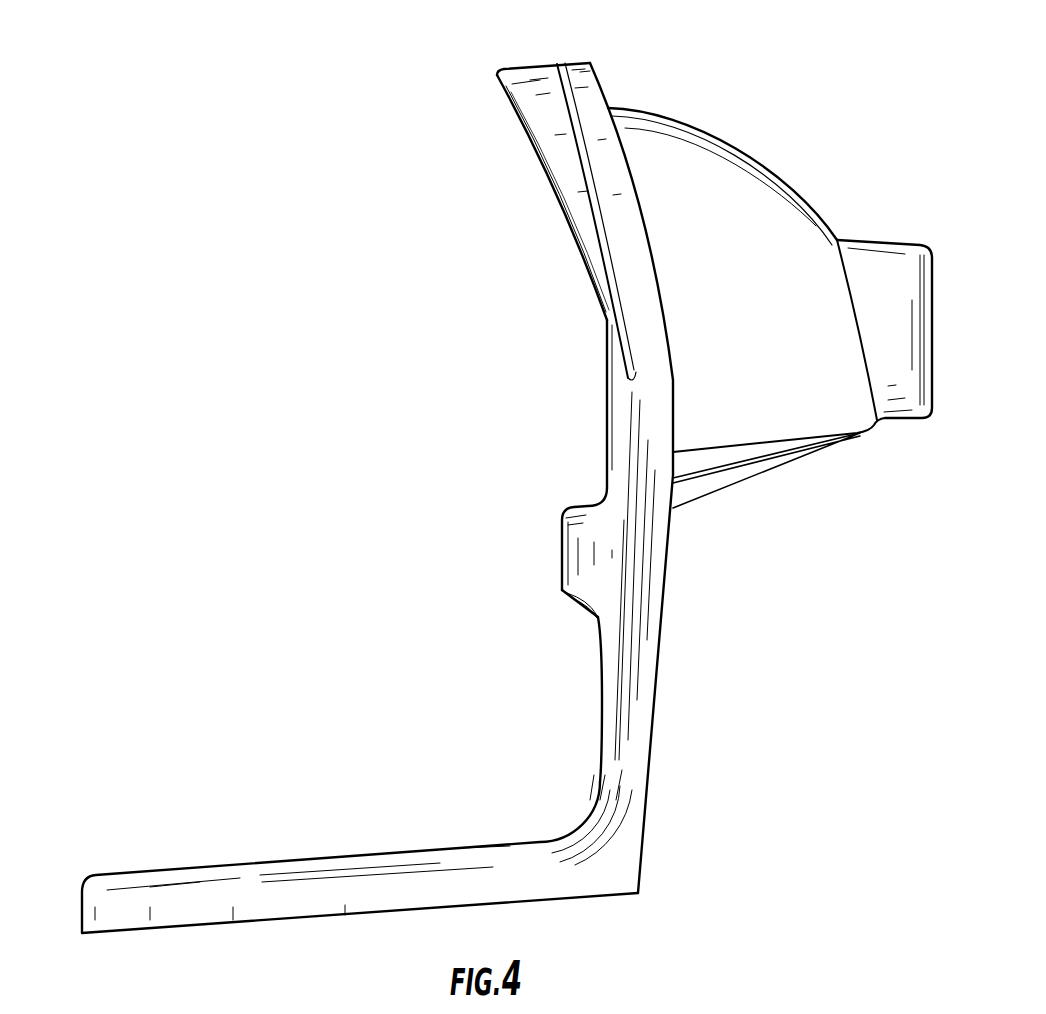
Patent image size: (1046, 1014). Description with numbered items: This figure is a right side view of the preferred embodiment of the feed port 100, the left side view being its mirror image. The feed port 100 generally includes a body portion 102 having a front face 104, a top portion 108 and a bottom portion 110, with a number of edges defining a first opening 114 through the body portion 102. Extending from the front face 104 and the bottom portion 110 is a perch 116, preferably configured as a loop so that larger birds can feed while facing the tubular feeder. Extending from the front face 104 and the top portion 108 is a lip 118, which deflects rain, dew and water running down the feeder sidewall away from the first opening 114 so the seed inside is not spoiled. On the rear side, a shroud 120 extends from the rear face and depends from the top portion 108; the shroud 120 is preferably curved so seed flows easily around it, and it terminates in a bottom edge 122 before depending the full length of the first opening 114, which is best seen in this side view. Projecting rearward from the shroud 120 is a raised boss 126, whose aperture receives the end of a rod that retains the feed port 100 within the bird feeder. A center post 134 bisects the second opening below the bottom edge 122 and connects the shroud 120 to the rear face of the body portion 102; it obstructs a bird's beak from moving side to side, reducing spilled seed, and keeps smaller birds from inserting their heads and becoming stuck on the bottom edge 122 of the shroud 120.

The feed port 100 is at (368, 150).
The body portion 102 is at (620, 483).
The front face 104 is at (570, 548).
The top portion 108 is at (578, 63).
The bottom portion 110 is at (597, 616).
The first opening 114 is at (583, 368).
The perch 116 is at (88, 880).
The lip 118 is at (497, 73).
The shroud 120 is at (700, 121).
The bottom edge 122 is at (858, 434).
The raised boss 126 is at (888, 243).
The center post 134 is at (777, 462).